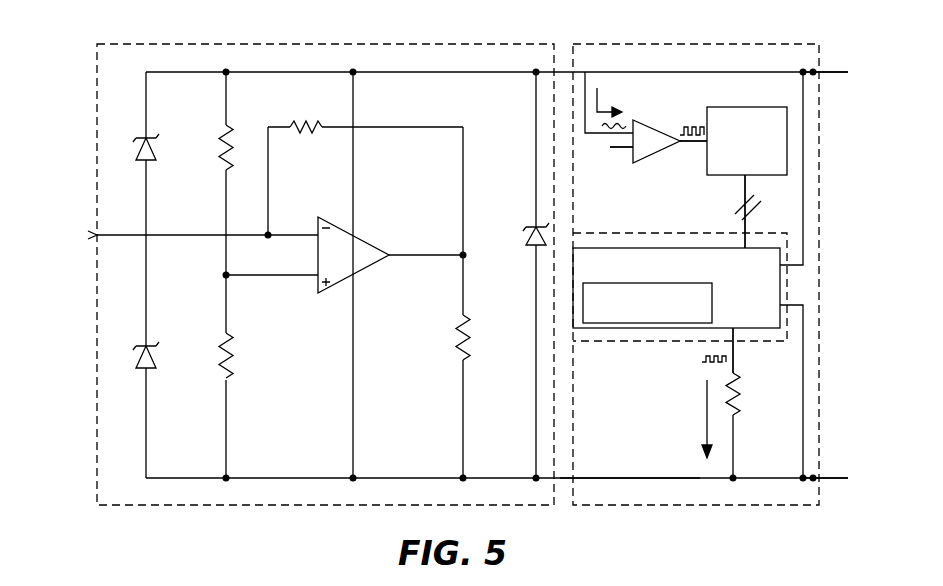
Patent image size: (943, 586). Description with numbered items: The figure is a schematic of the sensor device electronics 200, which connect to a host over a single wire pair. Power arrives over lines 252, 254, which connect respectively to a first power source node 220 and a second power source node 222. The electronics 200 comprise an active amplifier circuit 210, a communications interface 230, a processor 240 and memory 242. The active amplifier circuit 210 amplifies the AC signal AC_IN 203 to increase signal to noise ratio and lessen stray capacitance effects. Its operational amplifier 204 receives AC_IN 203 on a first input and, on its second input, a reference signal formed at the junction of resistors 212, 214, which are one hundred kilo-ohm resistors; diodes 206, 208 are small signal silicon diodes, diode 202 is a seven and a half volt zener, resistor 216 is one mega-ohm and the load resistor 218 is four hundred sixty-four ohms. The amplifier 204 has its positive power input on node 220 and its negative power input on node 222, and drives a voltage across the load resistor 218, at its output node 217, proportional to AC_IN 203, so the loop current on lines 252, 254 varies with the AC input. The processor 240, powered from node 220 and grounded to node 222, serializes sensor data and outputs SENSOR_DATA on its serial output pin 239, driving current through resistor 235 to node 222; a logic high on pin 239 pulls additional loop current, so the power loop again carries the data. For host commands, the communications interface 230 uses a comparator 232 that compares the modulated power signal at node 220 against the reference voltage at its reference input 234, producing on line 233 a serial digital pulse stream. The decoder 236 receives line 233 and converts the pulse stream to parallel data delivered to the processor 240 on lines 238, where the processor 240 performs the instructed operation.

The sensor device electronics 200 is at (87, 25).
The zener diode 202 is at (530, 235).
The AC input signal AC_IN 203 is at (94, 234).
The amplifier 204 is at (332, 222).
The diode 206 is at (140, 150).
The diode 208 is at (140, 350).
The active amplifier circuit 210 is at (216, 44).
The resistor 212 is at (220, 150).
The resistor 214 is at (221, 351).
The resistor R1 216 is at (307, 125).
The amplifier output node 217 is at (465, 257).
The load resistor R2 218 is at (460, 336).
The first power source node 220 is at (753, 72).
The second power source node 222 is at (603, 480).
The communications interface 230 is at (641, 44).
The comparator 232 is at (672, 128).
The comparator output line 233 is at (690, 142).
The reference voltage input 234 is at (620, 148).
The resistor 235 is at (737, 396).
The decoder 236 is at (758, 173).
The lines 238 is at (745, 200).
The serial output pin 239 is at (735, 338).
The processor 240 is at (749, 275).
The memory 242 is at (663, 313).
The power line 252 is at (825, 72).
The power line 254 is at (825, 478).